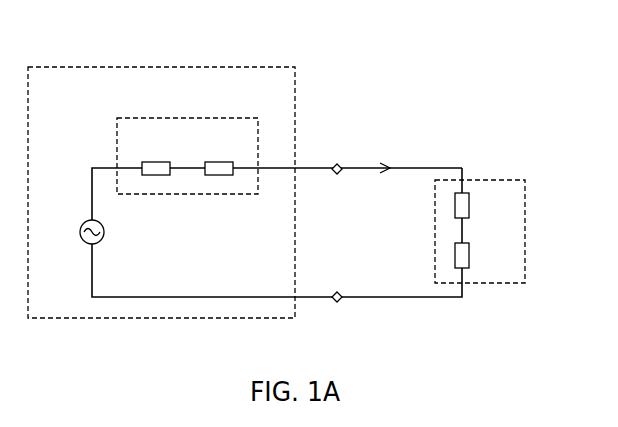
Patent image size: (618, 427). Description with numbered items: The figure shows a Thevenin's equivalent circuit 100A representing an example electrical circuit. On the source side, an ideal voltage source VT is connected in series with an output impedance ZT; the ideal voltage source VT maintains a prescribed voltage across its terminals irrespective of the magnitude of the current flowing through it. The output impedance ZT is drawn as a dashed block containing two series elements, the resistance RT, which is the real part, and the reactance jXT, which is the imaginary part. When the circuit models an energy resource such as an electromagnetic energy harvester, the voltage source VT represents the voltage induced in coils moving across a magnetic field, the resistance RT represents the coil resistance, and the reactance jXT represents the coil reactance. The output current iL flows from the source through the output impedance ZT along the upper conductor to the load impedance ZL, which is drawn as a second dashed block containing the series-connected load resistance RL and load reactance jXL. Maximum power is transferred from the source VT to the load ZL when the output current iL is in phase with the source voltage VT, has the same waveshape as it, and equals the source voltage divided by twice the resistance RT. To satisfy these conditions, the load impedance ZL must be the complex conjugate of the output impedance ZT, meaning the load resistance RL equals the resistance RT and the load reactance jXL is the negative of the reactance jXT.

The transmission line circuit model 100A is at (486, 106).
The output impedance ZT is at (187, 139).
The resistance RT is at (156, 155).
The reactance jXT is at (218, 155).
The ideal voltage source VT is at (77, 232).
The output current iL is at (383, 155).
The load impedance ZL is at (494, 231).
The load resistance RL is at (478, 206).
The load reactance jXL is at (478, 257).